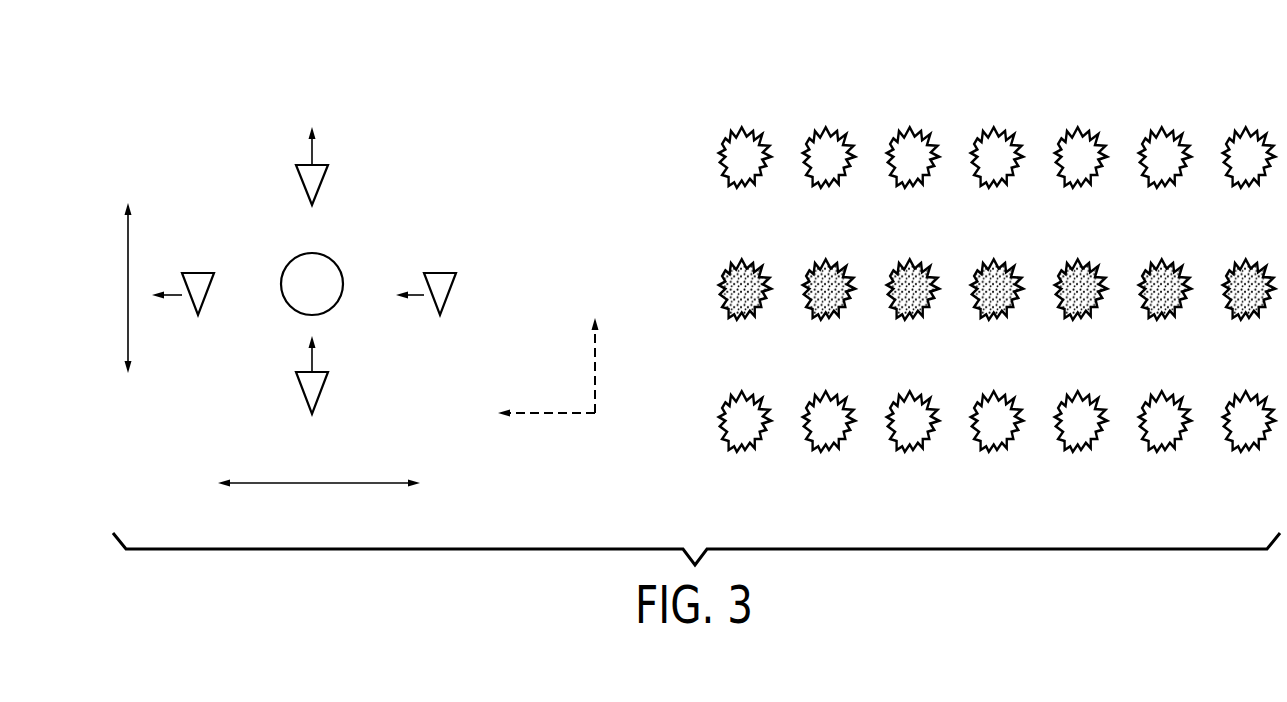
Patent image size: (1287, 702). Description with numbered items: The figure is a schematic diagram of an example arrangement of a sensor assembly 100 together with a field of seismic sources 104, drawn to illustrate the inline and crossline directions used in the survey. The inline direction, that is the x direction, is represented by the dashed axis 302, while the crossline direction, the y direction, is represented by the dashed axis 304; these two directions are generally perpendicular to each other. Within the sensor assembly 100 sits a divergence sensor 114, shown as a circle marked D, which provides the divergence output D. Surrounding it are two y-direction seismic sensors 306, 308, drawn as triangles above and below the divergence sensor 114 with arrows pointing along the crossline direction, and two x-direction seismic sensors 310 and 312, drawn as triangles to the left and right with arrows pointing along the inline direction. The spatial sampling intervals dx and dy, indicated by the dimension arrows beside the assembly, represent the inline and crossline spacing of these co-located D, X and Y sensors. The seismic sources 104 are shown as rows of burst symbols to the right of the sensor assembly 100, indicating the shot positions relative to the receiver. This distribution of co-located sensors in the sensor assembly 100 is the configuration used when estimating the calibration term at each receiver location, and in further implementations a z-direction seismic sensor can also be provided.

The sensor assembly 100 is at (415, 113).
The seismic sources 104 is at (997, 265).
The divergence sensor 114 is at (336, 262).
The inline direction 302 is at (552, 412).
The crossline direction 304 is at (593, 370).
The y-direction seismic sensor 306 is at (300, 184).
The y-direction seismic sensor 308 is at (320, 390).
The x-direction seismic sensor 310 is at (207, 297).
The x-direction seismic sensor 312 is at (455, 287).